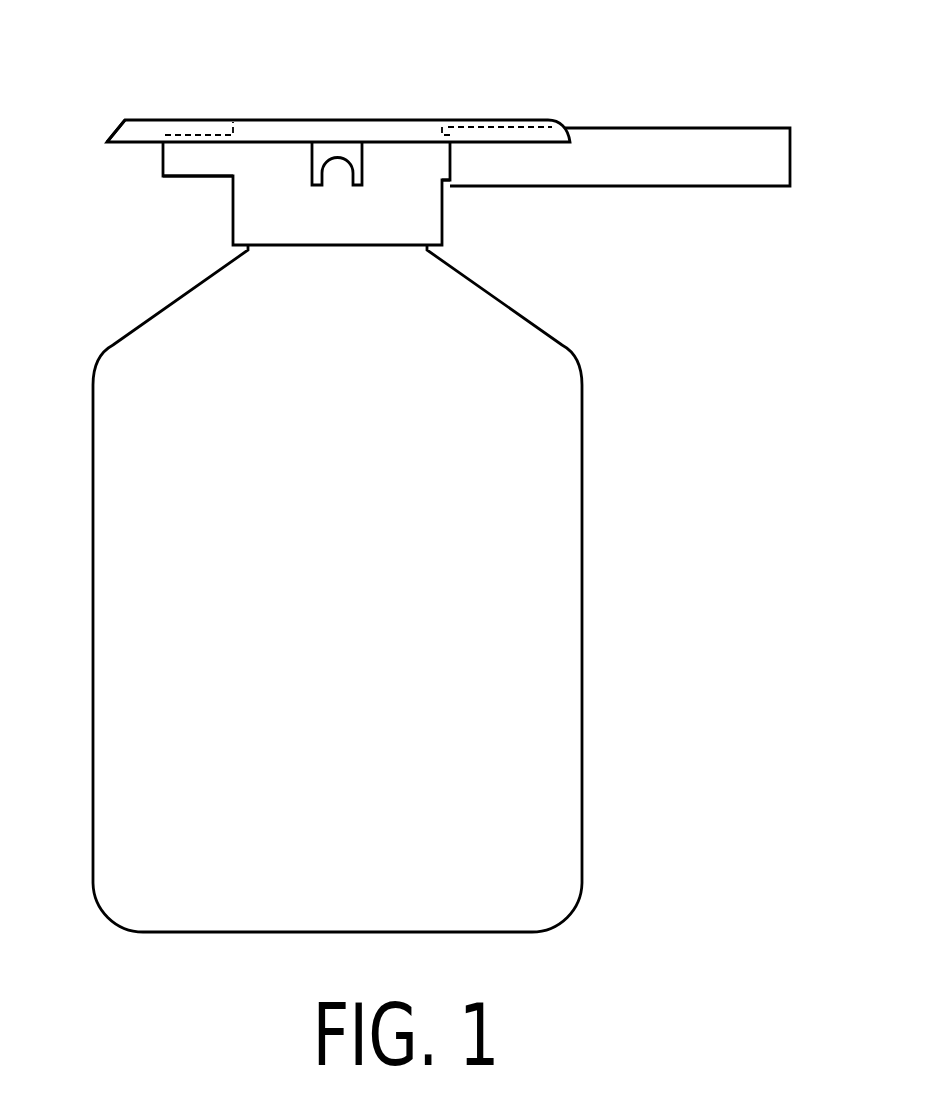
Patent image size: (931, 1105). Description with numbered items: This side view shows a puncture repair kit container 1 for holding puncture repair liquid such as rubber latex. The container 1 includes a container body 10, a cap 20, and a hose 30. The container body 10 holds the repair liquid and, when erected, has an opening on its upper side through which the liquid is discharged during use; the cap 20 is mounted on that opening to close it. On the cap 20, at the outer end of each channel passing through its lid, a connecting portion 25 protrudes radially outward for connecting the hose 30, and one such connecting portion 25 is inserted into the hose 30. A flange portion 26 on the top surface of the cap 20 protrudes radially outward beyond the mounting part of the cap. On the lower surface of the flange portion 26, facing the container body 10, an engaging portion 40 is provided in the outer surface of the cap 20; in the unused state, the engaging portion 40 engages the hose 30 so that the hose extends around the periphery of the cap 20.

The puncture repair kit container 1 is at (533, 86).
The container body 10 is at (580, 358).
The cap 20 is at (443, 118).
The connecting portion 25 is at (212, 164).
The flange portion 26 is at (126, 131).
The hose 30 is at (627, 133).
The engaging portion 40 is at (315, 177).